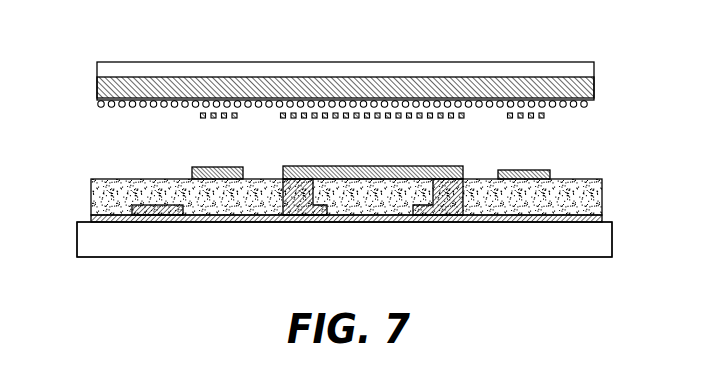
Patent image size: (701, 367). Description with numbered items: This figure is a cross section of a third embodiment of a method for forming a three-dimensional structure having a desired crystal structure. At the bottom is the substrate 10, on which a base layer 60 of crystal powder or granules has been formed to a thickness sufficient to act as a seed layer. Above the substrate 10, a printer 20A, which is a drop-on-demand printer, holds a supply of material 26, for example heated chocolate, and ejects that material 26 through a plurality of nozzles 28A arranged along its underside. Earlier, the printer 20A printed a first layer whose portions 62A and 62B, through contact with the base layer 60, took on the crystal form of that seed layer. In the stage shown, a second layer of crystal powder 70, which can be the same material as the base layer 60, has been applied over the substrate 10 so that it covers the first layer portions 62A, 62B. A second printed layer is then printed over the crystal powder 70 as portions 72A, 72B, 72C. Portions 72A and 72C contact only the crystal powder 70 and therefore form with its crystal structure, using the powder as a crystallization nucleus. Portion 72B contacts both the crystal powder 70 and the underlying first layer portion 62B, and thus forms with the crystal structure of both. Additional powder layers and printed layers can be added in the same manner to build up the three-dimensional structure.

The substrate 10 is at (76, 240).
The printer 20A is at (316, 62).
The material 26 is at (199, 78).
The nozzles 28A is at (586, 112).
The base layer 60 is at (602, 221).
The portion of first layer 62A is at (162, 215).
The portion of first layer 62B is at (298, 215).
The second layer of crystal powder 70 is at (598, 200).
The portion of second printed layer 72A is at (216, 167).
The portion of second printed layer 72B is at (300, 166).
The portion of second printed layer 72C is at (531, 170).